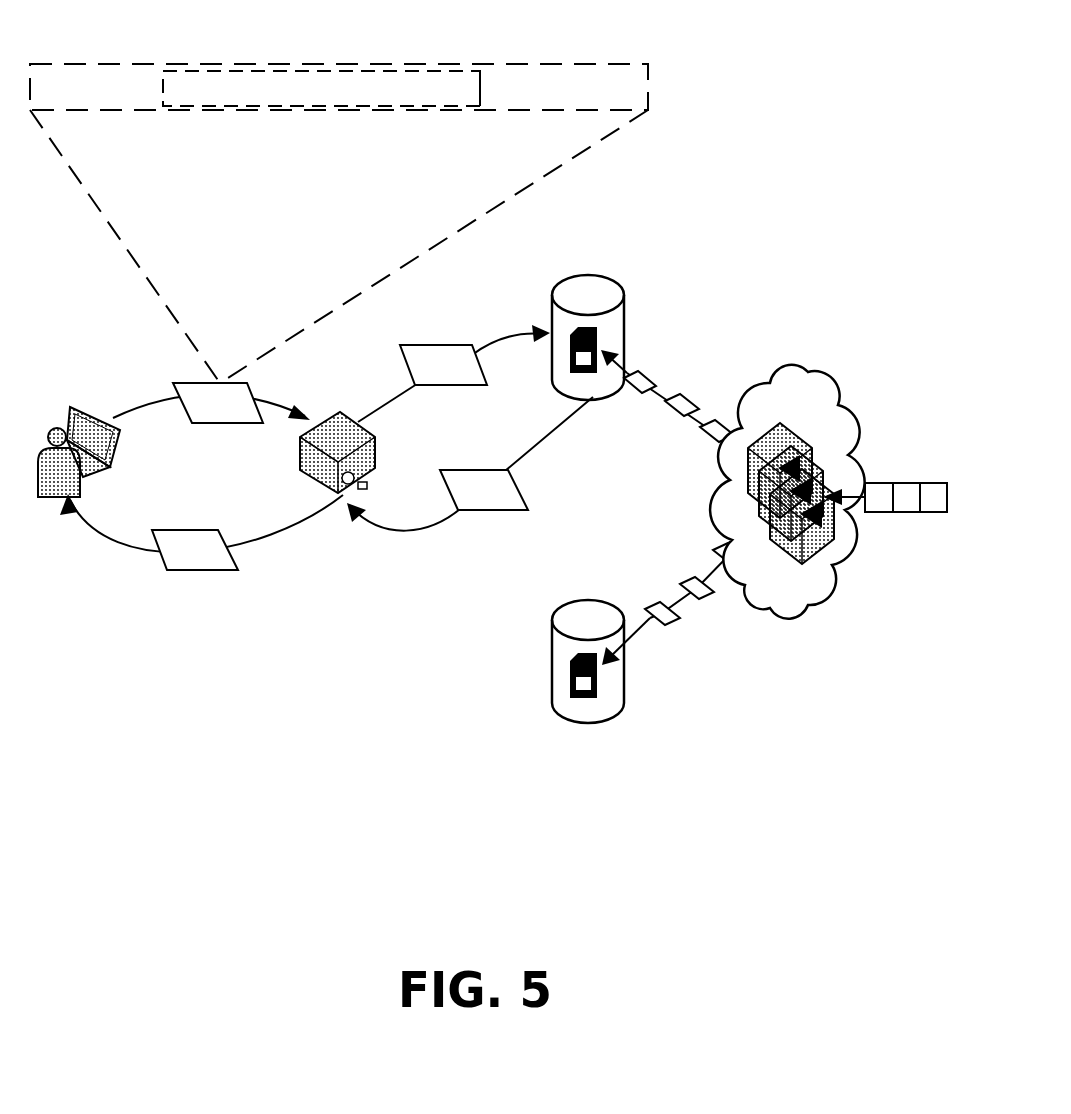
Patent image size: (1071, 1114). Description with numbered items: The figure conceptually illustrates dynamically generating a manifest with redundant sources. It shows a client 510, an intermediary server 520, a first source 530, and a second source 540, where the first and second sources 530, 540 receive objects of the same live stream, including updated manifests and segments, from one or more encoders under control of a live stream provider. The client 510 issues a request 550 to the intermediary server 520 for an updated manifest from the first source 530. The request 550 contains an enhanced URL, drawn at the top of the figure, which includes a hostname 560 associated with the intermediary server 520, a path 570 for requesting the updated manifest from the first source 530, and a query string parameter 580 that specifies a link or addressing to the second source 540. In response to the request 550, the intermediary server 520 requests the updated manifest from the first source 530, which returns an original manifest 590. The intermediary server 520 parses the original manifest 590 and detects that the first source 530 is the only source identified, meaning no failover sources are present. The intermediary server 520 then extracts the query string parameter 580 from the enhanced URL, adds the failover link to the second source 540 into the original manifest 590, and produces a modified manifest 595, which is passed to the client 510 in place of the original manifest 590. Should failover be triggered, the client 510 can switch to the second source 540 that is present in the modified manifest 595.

The client 510 is at (78, 408).
The intermediary server 520 is at (340, 408).
The first source 530 is at (623, 290).
The second source 540 is at (622, 705).
The request 550 is at (218, 403).
The hostname 560 is at (127, 82).
The path 570 is at (372, 72).
The query string parameter 580 is at (570, 82).
The original manifest 590 is at (484, 490).
The modified manifest 595 is at (195, 550).